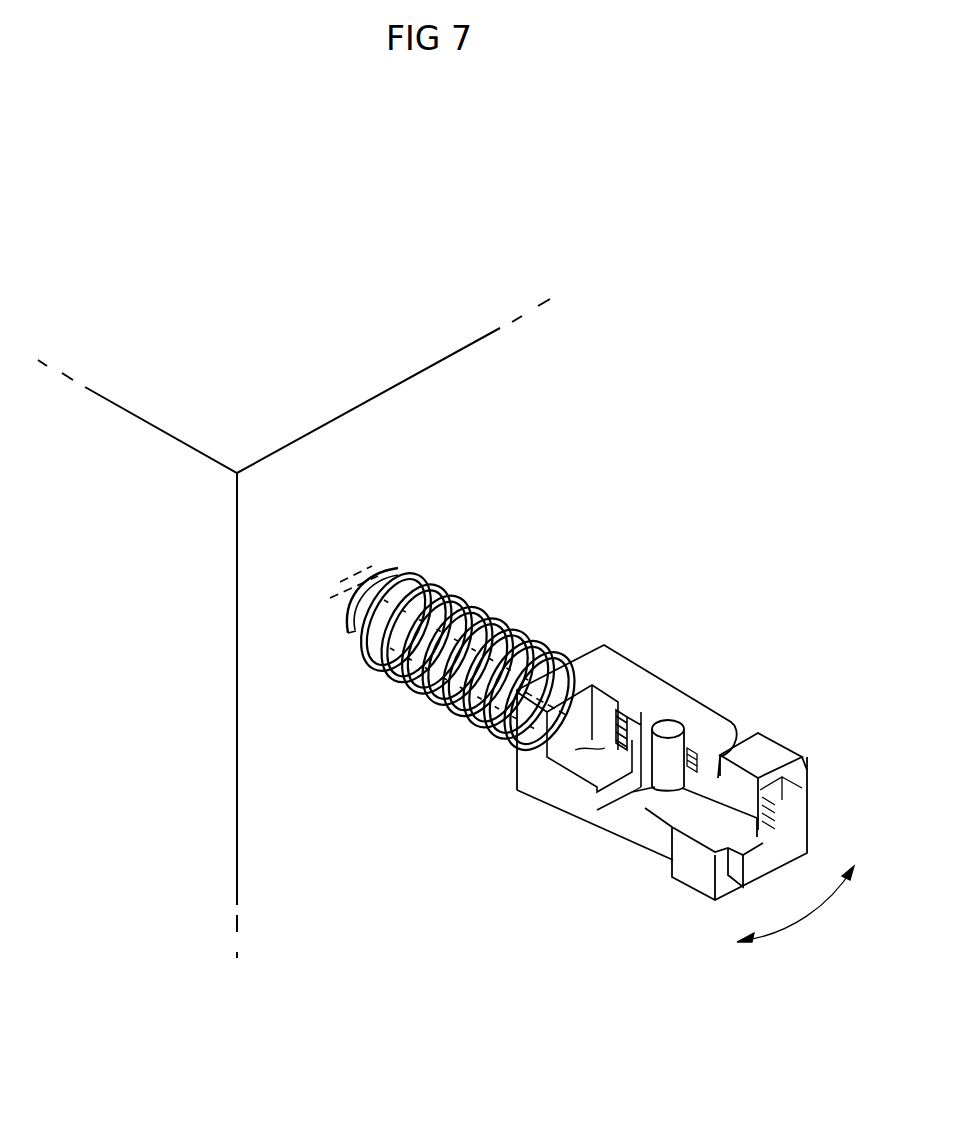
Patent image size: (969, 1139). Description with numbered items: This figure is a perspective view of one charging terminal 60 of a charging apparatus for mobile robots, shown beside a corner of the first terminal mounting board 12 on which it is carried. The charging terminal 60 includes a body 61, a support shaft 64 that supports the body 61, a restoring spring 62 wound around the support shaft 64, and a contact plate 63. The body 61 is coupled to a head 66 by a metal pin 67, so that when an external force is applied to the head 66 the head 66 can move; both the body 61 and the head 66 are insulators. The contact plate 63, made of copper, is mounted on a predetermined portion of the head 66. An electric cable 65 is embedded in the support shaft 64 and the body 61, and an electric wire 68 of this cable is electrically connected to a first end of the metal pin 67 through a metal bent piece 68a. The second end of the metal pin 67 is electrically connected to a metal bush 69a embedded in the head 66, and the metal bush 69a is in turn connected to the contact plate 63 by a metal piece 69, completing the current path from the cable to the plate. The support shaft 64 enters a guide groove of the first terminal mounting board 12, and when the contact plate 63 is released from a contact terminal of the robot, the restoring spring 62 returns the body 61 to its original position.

The first terminal mounting board 12 is at (403, 418).
The charging terminal 60 is at (641, 560).
The body 61 is at (633, 677).
The restoring spring 62 is at (414, 690).
The contact plate 63 is at (800, 800).
The support shaft 64 is at (362, 635).
The electric cable 65 is at (352, 592).
The head 66 is at (760, 744).
The metal pin 67 is at (671, 720).
The electric wire 68 is at (577, 758).
The bent piece 68a is at (587, 760).
The metal piece 69 is at (635, 800).
The metal bush 69a is at (638, 797).